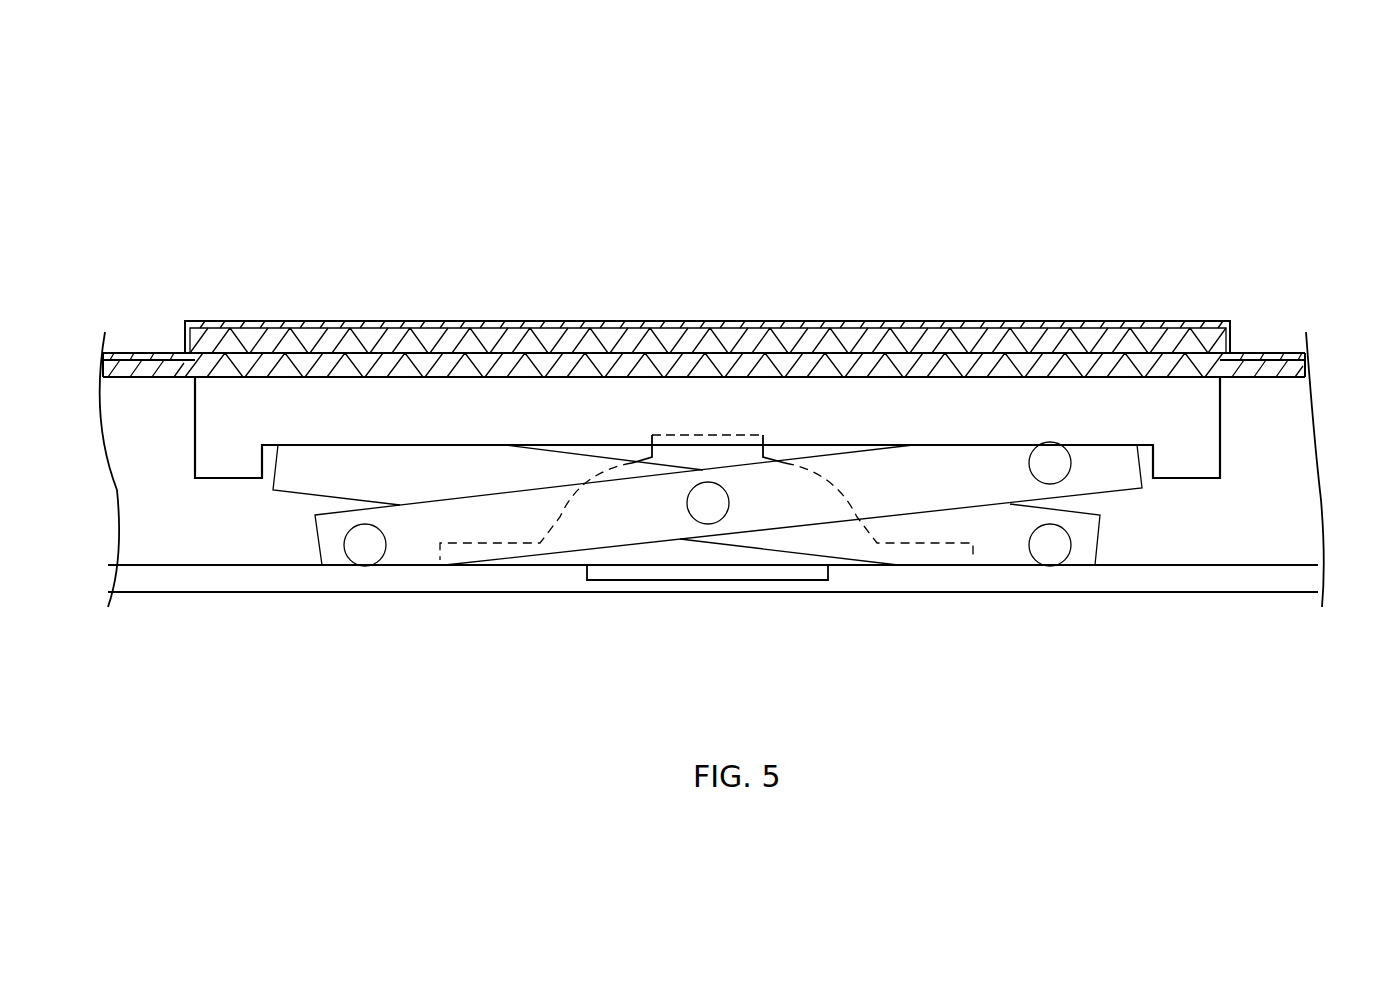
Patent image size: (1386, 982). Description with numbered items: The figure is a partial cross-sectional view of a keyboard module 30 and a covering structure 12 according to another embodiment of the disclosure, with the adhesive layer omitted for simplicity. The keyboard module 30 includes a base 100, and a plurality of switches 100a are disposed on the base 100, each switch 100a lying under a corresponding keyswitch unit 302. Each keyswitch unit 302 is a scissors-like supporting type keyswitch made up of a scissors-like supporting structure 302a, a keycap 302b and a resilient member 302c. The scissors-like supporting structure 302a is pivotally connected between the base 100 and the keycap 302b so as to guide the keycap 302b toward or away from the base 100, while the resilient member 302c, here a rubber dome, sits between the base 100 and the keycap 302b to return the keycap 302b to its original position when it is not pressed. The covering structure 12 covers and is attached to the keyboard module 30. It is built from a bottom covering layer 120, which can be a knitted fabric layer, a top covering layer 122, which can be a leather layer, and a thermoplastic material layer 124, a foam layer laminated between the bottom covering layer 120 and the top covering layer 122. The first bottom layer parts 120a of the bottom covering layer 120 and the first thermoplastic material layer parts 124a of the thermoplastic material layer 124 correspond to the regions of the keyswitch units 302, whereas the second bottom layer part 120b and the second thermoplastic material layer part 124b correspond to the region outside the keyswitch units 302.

The covering structure 12 is at (1322, 118).
The top covering layer 122 is at (830, 322).
The thermoplastic material layer 124 is at (1187, 170).
The first thermoplastic material layer part 124a is at (1122, 338).
The second thermoplastic material layer part 124b is at (1212, 368).
The bottom covering layer 120 is at (1363, 168).
The first bottom layer part 120a is at (1258, 368).
The second bottom layer part 120b is at (1283, 353).
The keyboard module 30 is at (148, 505).
The keyswitch unit 302 is at (535, 172).
The scissors-like supporting structure 302a is at (463, 470).
The keycap 302b is at (340, 403).
The resilient member 302c is at (642, 460).
The base 100 is at (1150, 580).
The switch 100a is at (748, 572).